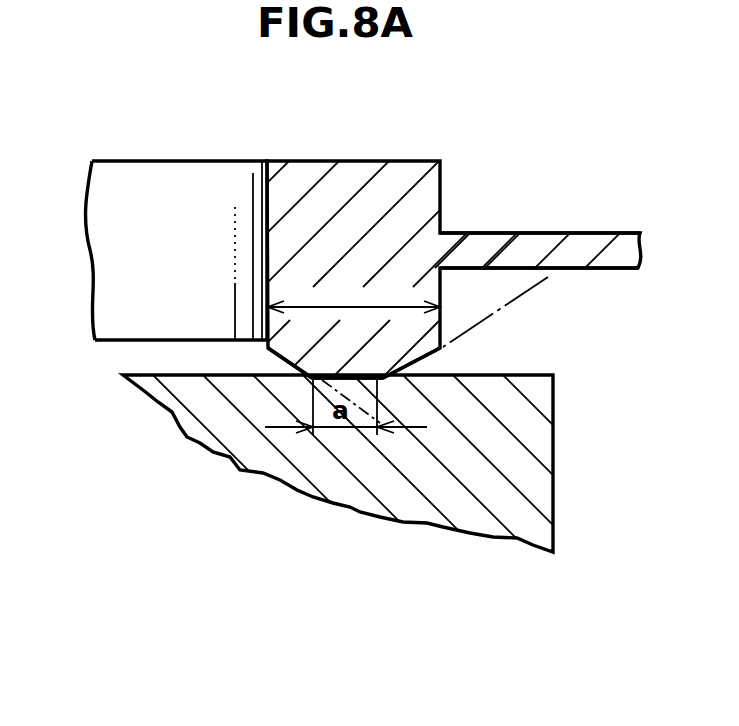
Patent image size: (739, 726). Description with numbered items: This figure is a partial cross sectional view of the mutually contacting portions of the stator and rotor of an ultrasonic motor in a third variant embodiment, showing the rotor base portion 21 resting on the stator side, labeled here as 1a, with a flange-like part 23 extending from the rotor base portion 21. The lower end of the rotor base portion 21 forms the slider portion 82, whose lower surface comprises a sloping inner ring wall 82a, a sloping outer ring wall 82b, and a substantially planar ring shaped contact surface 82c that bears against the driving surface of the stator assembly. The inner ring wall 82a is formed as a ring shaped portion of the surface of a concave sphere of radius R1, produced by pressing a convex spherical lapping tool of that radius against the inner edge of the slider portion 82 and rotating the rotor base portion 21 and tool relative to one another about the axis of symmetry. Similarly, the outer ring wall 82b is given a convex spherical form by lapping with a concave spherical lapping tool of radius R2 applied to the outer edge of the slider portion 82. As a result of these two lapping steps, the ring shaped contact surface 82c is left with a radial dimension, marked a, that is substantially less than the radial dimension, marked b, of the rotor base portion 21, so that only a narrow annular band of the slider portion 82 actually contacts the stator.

The rotor base portion 21 is at (293, 162).
The punch flange 23 is at (577, 233).
The workpiece 1a is at (555, 466).
The slider portion 82 is at (340, 380).
The inner ring wall 82a is at (326, 366).
The outer ring wall 82b is at (436, 352).
The ring shaped contact surface 82c is at (290, 401).
The radius of concave sphere R1 is at (415, 456).
The radius of concave spherical lapping tool R2 is at (546, 276).